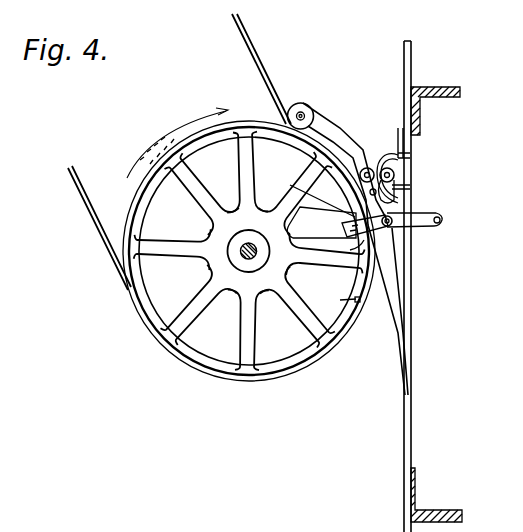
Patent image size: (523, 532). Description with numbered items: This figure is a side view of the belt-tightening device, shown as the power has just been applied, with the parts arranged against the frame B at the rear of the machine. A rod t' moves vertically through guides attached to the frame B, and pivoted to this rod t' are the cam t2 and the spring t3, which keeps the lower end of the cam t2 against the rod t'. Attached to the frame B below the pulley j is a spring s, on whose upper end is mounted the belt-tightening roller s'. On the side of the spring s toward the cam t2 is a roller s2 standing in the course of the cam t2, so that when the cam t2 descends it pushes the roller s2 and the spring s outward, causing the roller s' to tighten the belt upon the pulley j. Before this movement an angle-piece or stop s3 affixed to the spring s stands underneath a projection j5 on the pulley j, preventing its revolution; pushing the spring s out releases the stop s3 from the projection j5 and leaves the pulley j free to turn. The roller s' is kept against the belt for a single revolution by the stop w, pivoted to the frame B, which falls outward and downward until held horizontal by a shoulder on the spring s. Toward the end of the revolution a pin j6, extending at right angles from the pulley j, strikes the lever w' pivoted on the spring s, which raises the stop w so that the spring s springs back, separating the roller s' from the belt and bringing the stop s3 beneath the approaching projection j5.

The pulley j is at (269, 274).
The projection j5 is at (311, 195).
The pin j6 is at (340, 297).
The spring s is at (355, 249).
The belt-tightening roller s' is at (312, 112).
The roller s2 is at (361, 198).
The angle-piece or stop s3 is at (346, 250).
The rod t' is at (412, 286).
The cam t2 is at (394, 198).
The spring t3 is at (400, 134).
The stop w is at (384, 171).
The lever w' is at (337, 222).
The frame B is at (449, 307).